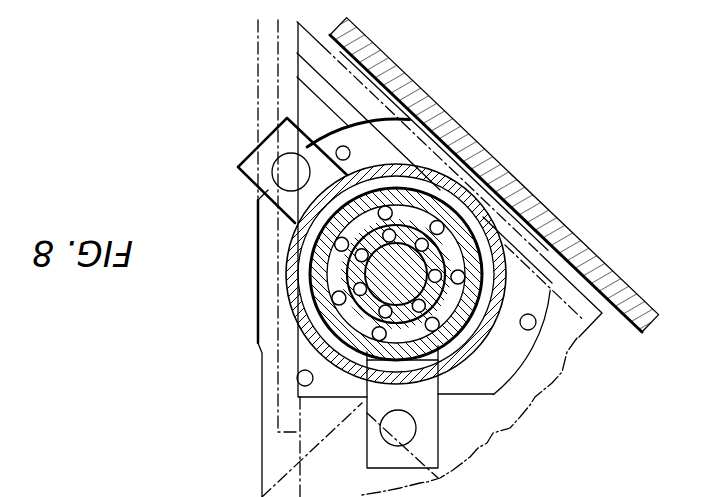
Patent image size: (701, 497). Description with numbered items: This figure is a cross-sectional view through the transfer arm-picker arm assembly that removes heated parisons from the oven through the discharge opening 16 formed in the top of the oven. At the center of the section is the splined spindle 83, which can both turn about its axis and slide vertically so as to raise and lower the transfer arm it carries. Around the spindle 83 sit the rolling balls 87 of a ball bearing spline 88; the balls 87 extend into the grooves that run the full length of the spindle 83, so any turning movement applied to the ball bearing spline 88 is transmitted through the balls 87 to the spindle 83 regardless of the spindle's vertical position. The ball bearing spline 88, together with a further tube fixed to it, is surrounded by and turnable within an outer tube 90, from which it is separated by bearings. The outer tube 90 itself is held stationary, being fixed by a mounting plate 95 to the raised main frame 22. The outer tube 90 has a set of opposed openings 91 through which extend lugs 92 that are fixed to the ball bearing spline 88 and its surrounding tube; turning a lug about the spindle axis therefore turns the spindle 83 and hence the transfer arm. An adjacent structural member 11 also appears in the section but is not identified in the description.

The frame member 11 is at (607, 262).
The discharge opening 16 is at (487, 208).
The raised main frame 22 is at (278, 466).
The spindle 83 is at (396, 274).
The rolling balls 87 is at (457, 349).
The ball bearing spline 88 is at (320, 336).
The outer tube 90 is at (262, 250).
The opposed openings 91 is at (343, 378).
The lugs 92 is at (367, 452).
The mounting plate 95 is at (290, 372).